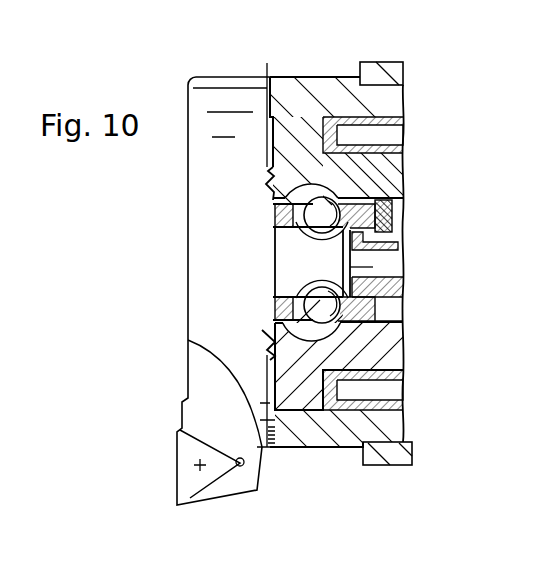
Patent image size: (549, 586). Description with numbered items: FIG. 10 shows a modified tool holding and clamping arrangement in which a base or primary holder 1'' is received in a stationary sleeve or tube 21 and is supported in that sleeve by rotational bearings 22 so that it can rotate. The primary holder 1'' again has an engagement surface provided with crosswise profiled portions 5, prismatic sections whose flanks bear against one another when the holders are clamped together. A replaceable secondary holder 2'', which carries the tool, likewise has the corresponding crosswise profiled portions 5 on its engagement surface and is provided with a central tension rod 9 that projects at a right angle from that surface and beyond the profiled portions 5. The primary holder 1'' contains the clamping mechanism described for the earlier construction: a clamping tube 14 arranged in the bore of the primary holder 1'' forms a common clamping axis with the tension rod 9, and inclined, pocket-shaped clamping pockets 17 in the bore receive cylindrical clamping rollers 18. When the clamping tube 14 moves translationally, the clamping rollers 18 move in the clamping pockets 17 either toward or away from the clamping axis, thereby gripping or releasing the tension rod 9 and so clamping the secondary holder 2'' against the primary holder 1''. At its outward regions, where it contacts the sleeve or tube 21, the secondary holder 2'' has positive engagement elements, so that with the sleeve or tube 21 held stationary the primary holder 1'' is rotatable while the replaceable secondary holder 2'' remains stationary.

The primary holder 1'' is at (329, 263).
The replaceable secondary holder 2'' is at (205, 284).
The profiled portions 5 is at (263, 184).
The tension rod 9 is at (290, 262).
The clamping tube 14 is at (397, 200).
The clamping pockets 17 is at (300, 187).
The clamping rollers 18 is at (345, 197).
The stationary sleeve 21 is at (338, 432).
The rotational bearings 22 is at (395, 120).